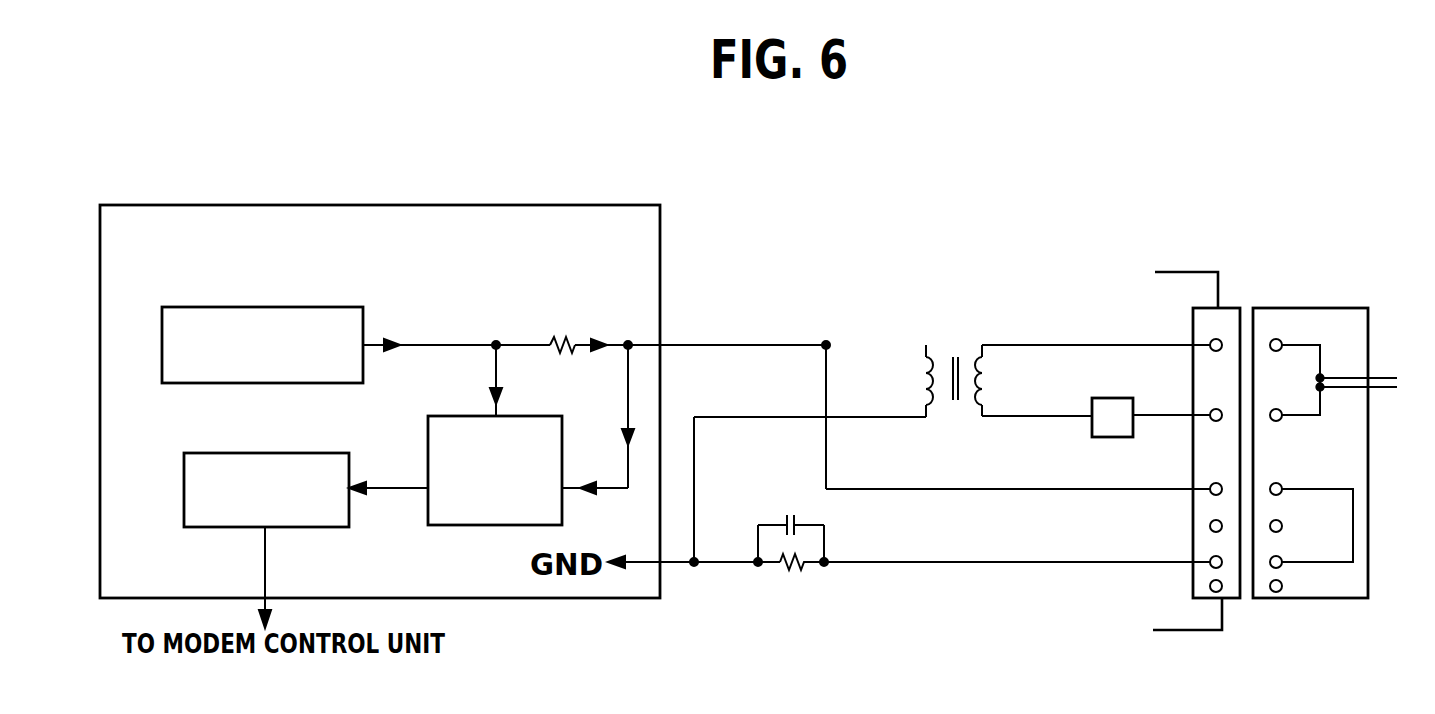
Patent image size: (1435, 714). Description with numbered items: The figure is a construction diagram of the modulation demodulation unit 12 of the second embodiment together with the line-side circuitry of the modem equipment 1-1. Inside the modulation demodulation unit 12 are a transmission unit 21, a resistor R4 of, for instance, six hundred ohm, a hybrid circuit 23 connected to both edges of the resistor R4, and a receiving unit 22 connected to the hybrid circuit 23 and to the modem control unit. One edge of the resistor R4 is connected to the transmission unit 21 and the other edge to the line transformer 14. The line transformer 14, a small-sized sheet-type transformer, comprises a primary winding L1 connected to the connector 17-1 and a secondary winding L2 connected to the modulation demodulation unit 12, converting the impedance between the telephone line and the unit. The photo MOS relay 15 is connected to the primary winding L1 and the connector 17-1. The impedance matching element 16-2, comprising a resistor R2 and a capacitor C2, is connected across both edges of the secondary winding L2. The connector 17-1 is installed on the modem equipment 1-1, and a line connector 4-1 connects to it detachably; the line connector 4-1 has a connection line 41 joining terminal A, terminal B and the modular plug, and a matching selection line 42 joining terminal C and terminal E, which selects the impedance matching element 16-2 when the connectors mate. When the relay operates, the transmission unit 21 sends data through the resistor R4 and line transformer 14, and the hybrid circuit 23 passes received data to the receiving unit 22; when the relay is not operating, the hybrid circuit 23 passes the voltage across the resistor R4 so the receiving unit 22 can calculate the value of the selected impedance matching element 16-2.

The modulation demodulation unit 12 is at (280, 204).
The transmission unit 21 is at (286, 307).
The receiving unit 22 is at (290, 453).
The hybrid circuit 23 is at (443, 416).
The resistor R4 is at (564, 307).
The line transformer 14 is at (1040, 352).
The primary winding L1 is at (1020, 381).
The secondary winding L2 is at (891, 381).
The photo MOS relay 15 is at (1113, 438).
The impedance matching element 16-2 is at (790, 582).
The capacitor C2 is at (790, 502).
The resistor R2 is at (793, 593).
The modem equipment 1-1 is at (1170, 271).
The connector 17-1 is at (1230, 308).
The line connector 4-1 is at (1293, 308).
The connection line 41 is at (1320, 360).
The matching selection line 42 is at (1355, 511).